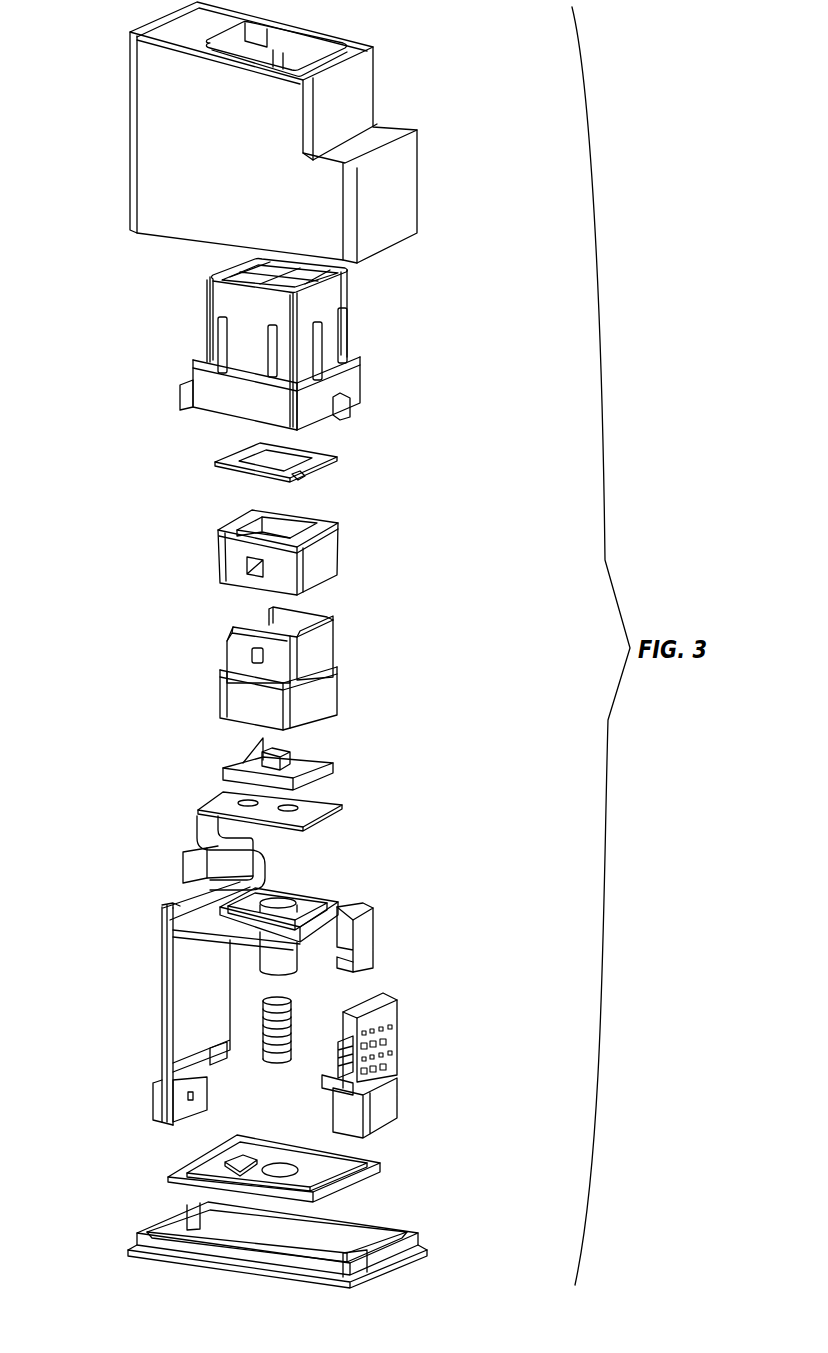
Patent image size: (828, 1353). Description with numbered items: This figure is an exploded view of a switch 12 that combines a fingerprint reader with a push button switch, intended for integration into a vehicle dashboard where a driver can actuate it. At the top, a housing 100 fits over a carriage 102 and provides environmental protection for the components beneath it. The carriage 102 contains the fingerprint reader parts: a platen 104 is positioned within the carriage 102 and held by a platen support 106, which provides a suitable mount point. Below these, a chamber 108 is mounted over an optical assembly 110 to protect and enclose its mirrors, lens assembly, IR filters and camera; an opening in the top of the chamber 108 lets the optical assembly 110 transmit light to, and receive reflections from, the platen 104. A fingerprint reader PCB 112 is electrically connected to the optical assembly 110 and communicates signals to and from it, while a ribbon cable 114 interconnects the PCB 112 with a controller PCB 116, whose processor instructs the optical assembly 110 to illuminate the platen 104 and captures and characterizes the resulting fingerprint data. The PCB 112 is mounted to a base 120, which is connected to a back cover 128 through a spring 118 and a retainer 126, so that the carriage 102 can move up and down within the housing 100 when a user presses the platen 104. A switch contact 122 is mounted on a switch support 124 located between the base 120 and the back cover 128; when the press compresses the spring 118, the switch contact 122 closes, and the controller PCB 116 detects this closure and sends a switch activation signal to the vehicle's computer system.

The switch 12 is at (480, 128).
The housing 100 is at (130, 127).
The carriage 102 is at (222, 330).
The platen 104 is at (215, 463).
The platen support 106 is at (218, 530).
The chamber 108 is at (220, 687).
The optical assembly 110 is at (223, 770).
The fingerprint reader printed circuit board 112 is at (198, 810).
The ribbon cable 114 is at (190, 855).
The controller PCB 116 is at (162, 953).
The spring 118 is at (262, 1036).
The base 120 is at (297, 892).
The switch contact 122 is at (373, 933).
The switch support 124 is at (397, 1047).
The retainer 126 is at (190, 1158).
The back cover 128 is at (170, 1227).